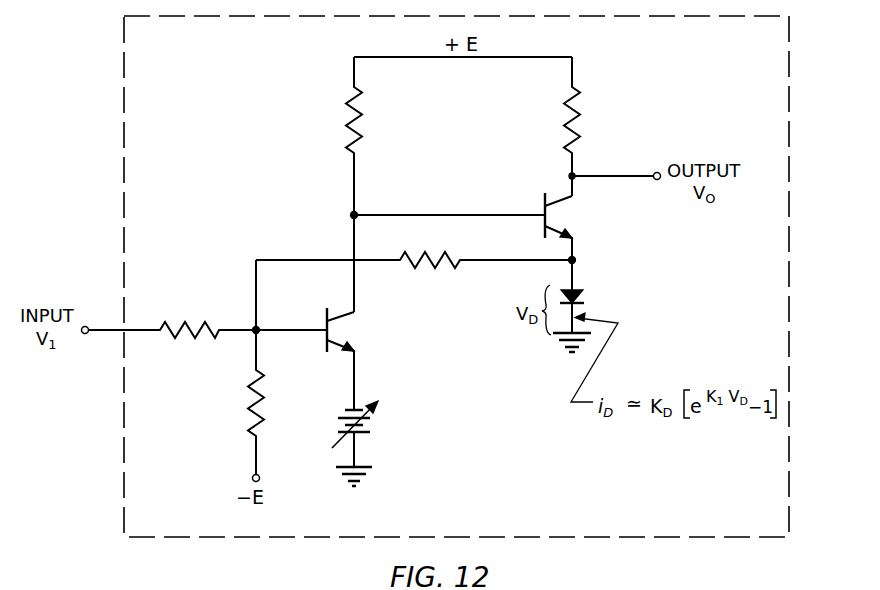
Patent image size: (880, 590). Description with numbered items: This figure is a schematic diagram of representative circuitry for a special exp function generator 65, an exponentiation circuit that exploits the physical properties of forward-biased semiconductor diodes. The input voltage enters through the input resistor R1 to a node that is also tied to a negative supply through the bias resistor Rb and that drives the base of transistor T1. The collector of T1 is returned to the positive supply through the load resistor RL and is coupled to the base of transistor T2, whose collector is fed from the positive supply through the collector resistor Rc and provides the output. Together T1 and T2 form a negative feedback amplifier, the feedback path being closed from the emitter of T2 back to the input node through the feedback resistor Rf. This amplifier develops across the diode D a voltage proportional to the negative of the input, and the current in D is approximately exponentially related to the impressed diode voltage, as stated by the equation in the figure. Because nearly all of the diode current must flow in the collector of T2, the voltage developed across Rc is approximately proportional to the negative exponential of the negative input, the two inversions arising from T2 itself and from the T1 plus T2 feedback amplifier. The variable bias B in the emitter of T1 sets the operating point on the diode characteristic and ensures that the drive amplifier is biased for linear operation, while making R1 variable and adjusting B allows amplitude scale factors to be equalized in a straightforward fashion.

The exp function generator 65 is at (789, 220).
The load resistor RL is at (369, 184).
The collector resistor RC is at (589, 126).
The feedback resistor Rf is at (414, 278).
The input resistor R1 is at (208, 344).
The bias resistor Rb is at (237, 371).
The transistor T1 is at (352, 359).
The transistor T2 is at (570, 226).
The diode D is at (582, 296).
The variable bias B is at (363, 434).